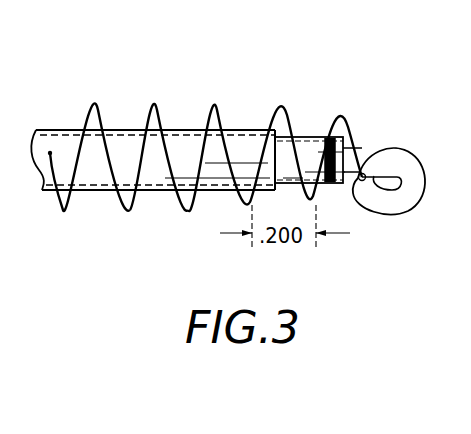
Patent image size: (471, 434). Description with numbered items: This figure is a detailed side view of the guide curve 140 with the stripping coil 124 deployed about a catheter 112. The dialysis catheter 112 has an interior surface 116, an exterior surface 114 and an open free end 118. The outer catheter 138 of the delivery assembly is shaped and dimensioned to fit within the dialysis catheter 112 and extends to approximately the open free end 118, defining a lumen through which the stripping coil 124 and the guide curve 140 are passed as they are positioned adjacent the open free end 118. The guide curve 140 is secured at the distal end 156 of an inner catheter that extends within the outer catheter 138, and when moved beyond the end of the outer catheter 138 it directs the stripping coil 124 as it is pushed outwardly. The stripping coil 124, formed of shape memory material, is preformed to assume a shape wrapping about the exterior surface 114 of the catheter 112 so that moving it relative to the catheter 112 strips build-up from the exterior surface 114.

The catheter 112 is at (160, 197).
The exterior surface 114 is at (97, 178).
The interior surface 116 is at (83, 132).
The open free end 118 is at (288, 155).
The stripping coil 124 is at (157, 118).
The outer catheter 138 is at (310, 140).
The guide curve 140 is at (365, 193).
The distal end 156 is at (417, 150).